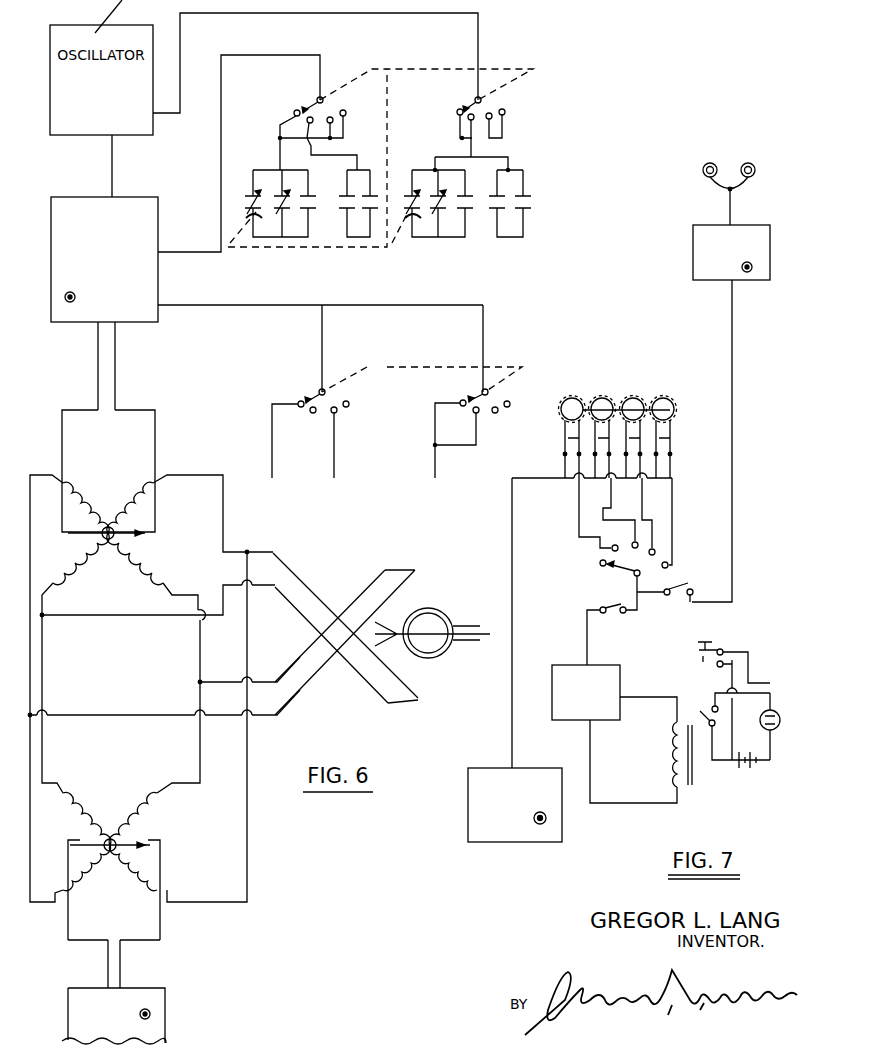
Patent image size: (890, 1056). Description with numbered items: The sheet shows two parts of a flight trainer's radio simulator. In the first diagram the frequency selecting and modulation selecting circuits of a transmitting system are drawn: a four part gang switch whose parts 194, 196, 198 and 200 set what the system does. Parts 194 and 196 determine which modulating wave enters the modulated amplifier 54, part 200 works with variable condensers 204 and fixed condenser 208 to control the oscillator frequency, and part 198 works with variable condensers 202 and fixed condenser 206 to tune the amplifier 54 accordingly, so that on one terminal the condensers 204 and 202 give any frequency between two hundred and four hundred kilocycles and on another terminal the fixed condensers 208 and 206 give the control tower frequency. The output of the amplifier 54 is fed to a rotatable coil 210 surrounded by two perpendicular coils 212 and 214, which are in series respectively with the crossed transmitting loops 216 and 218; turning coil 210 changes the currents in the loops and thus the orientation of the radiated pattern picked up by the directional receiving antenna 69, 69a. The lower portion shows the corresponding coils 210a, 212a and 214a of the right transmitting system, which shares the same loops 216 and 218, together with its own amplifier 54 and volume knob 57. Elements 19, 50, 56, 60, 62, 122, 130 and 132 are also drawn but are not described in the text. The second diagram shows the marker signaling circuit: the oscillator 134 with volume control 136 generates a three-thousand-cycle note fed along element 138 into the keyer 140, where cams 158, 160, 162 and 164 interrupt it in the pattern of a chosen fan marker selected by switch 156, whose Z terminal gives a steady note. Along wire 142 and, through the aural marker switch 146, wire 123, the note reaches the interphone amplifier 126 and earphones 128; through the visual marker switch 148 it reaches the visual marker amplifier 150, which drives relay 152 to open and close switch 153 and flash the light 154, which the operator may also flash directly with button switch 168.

In FIG. 6, the waveguide crossing 19 is at (381, 639).
In FIG. 6, the lead 50 is at (274, 440).
In FIG. 6, the modulated amplifier 54 is at (106, 197).
In FIG. 6, the lead 56 is at (283, 305).
In FIG. 6, the knob 57 is at (65, 294).
In FIG. 6, the transmission line 60 is at (116, 362).
In FIG. 6, the transformer 62 is at (164, 675).
In FIG. 6, the receiving antenna 69 is at (430, 637).
In FIG. 6, the receiving antenna 69a is at (440, 609).
In FIG. 6, the lead 122 is at (435, 465).
In FIG. 7, the wire 123 is at (735, 525).
In FIG. 7, the interphone amplifier 126 is at (697, 248).
In FIG. 7, the earphones 128 is at (722, 183).
In FIG. 7, the lead 130 is at (727, 200).
In FIG. 7, the terminal 132 is at (752, 273).
In FIG. 7, the oscillator 134 is at (498, 830).
In FIG. 7, the volume control 136 is at (545, 824).
In FIG. 7, the element 138 is at (513, 578).
In FIG. 7, the keyer 140 is at (630, 389).
In FIG. 7, the wire 142 is at (652, 593).
In FIG. 7, the aural marker switch 146 is at (681, 585).
In FIG. 7, the visual marker switch 148 is at (610, 613).
In FIG. 7, the visual marker amplifier 150 is at (622, 690).
In FIG. 7, the visual marker relay 152 is at (672, 757).
In FIG. 7, the switch 153 is at (712, 707).
In FIG. 7, the light 154 is at (775, 732).
In FIG. 7, the switch 156 is at (622, 575).
In FIG. 7, the cam 158 is at (570, 395).
In FIG. 7, the cam 160 is at (602, 395).
In FIG. 7, the cam 162 is at (636, 395).
In FIG. 7, the cam 164 is at (675, 419).
In FIG. 7, the button switch 168 is at (710, 646).
In FIG. 6, the gang switch part 194 is at (302, 391).
In FIG. 6, the gang switch part 196 is at (468, 389).
In FIG. 6, the gang switch part 198 is at (330, 100).
In FIG. 6, the gang switch part 200 is at (468, 102).
In FIG. 6, the variable condensers 202 is at (260, 220).
In FIG. 6, the variable condensers 204 is at (424, 220).
In FIG. 6, the fixed condenser 206 is at (352, 222).
In FIG. 6, the fixed condenser 208 is at (504, 222).
In FIG. 6, the coil 210 is at (140, 537).
In FIG. 6, the coil 210a is at (207, 860).
In FIG. 6, the coil 212 is at (144, 483).
In FIG. 6, the coil 212a is at (73, 793).
In FIG. 6, the coil 214 is at (72, 483).
In FIG. 6, the coil 214a is at (152, 793).
In FIG. 6, the transmitting loop 216 is at (322, 683).
In FIG. 6, the transmitting loop 218 is at (370, 583).